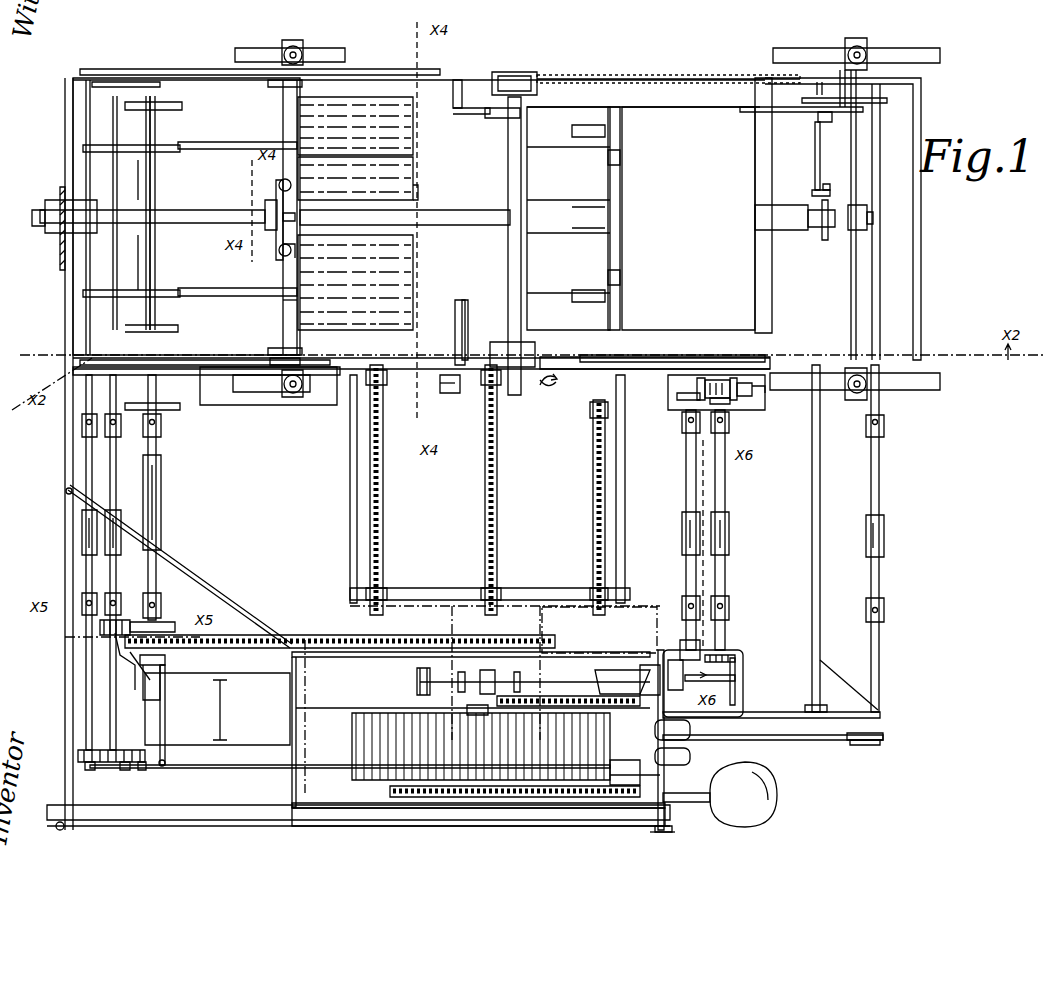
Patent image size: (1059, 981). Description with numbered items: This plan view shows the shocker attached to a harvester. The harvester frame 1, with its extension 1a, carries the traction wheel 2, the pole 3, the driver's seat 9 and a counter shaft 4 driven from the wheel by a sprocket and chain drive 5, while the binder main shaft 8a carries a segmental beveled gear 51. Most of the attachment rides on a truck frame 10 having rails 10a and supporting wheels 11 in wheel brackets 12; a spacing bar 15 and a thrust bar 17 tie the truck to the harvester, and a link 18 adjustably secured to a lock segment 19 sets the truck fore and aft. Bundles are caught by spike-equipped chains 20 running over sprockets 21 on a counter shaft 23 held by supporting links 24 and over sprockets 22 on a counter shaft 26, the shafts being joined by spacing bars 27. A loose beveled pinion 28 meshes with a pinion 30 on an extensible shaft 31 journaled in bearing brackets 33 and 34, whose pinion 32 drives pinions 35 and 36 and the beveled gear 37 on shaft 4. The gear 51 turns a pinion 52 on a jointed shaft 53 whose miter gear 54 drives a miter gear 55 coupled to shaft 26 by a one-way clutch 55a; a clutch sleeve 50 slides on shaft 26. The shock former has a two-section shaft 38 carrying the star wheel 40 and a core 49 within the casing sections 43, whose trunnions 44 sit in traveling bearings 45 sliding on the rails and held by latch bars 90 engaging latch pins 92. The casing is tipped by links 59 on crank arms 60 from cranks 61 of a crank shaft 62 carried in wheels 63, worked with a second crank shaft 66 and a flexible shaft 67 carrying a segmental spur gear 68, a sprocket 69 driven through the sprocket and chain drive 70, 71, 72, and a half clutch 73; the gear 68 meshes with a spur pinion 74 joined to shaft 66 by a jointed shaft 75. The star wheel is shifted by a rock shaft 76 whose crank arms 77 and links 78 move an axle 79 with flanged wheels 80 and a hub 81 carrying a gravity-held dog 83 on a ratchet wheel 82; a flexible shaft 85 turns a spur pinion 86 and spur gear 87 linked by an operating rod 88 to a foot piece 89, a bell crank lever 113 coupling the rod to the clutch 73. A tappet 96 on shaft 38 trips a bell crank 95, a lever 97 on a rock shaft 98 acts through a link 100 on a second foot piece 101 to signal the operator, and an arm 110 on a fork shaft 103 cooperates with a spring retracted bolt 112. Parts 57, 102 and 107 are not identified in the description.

The harvester frame 1 is at (553, 652).
The frame extension 1a is at (236, 745).
The traction wheel 2 is at (481, 742).
The pole 3 is at (178, 808).
The counter shaft 4 is at (620, 770).
The sprocket and chain drive 5 is at (520, 795).
The main shaft of the binder 8a is at (735, 662).
The driver's seat 9 is at (720, 794).
The truck frame 10 is at (70, 172).
The rails 10a is at (250, 120).
The supporting wheels 11 is at (258, 52).
The wheel brackets 12 is at (303, 50).
The spacing bar 15 is at (812, 550).
The thrust bar 17 is at (178, 566).
The link 18 is at (345, 826).
The lock segment 19 is at (668, 830).
The spike-equipped chains 20 is at (375, 520).
The sprockets 21 is at (385, 595).
The sprockets 22 is at (380, 385).
The counter shaft 23 is at (435, 590).
The supporting links 24 is at (760, 330).
The counter shaft 26 is at (553, 392).
The spacing bars 27 is at (350, 538).
The beveled pinion 28 is at (727, 355).
The beveled pinion 30 is at (668, 405).
The extensible shaft 31 is at (683, 568).
The beveled pinion 32 is at (683, 650).
The bearing bracket 33 is at (677, 397).
The bearing bracket 34 is at (738, 652).
The beveled pinion 35 is at (681, 684).
The beveled pinion 36 is at (650, 670).
The beveled gear 37 is at (615, 688).
The shaft 38 is at (190, 225).
The star wheel 40 is at (440, 140).
The casing sections 43 is at (510, 178).
The trunnions 44 is at (818, 118).
The traveling bearings 45 is at (520, 80).
The core 49 is at (465, 318).
The clutch sleeve 50 is at (458, 395).
The segmental beveled gear 51 is at (735, 690).
The beveled pinion 52 is at (715, 656).
The jointed extensible shaft 53 is at (722, 575).
The miter gear 54 is at (728, 404).
The miter gear 55 is at (735, 400).
The one-way clutch 55a is at (760, 395).
The rail 57 is at (415, 362).
The links 59 is at (392, 62).
The crank arms 60 is at (460, 80).
The cranks 61 is at (120, 70).
The crank shaft 62 is at (153, 270).
The wheels 63 is at (163, 110).
The second crank shaft 66 is at (115, 262).
The flexible extensible shaft 67 is at (160, 523).
The segmental spur gear 68 is at (160, 628).
The sprocket 69 is at (135, 672).
The sprocket and chain drive 70 is at (345, 635).
The sprocket and chain drive 71 is at (522, 660).
The sprocket and chain drive 72 is at (560, 700).
The half clutch 73 is at (160, 665).
The spur pinion 74 is at (100, 628).
The jointed extensible shaft 75 is at (113, 478).
The rock shaft 76 is at (46, 384).
The crank arms 77 is at (139, 235).
The links 78 is at (227, 152).
The transverse axle 79 is at (285, 315).
The flanged wheels 80 is at (277, 88).
The hub 81 is at (290, 235).
The ratchet wheel 82 is at (285, 255).
The gravity-held dog 83 is at (300, 217).
The jointed flexible shaft 85 is at (86, 470).
The spur pinion 86 is at (80, 765).
The spur gear 87 is at (125, 770).
The operating rod 88 is at (240, 768).
The foot piece 89 is at (690, 758).
The latch bars 90 is at (648, 72).
The latch pins 92 is at (870, 738).
The bell crank 95 is at (816, 157).
The tappet 96 is at (823, 232).
The lever 97 is at (890, 100).
The rock shaft 98 is at (878, 305).
The link 100 is at (840, 745).
The foot piece 101 is at (690, 732).
The contact 102 is at (590, 135).
The fork shafts 103 is at (622, 125).
The rod 107 is at (832, 97).
The arm 110 is at (558, 118).
The spring retracted bolt 112 is at (492, 120).
The bell crank lever 113 is at (165, 722).